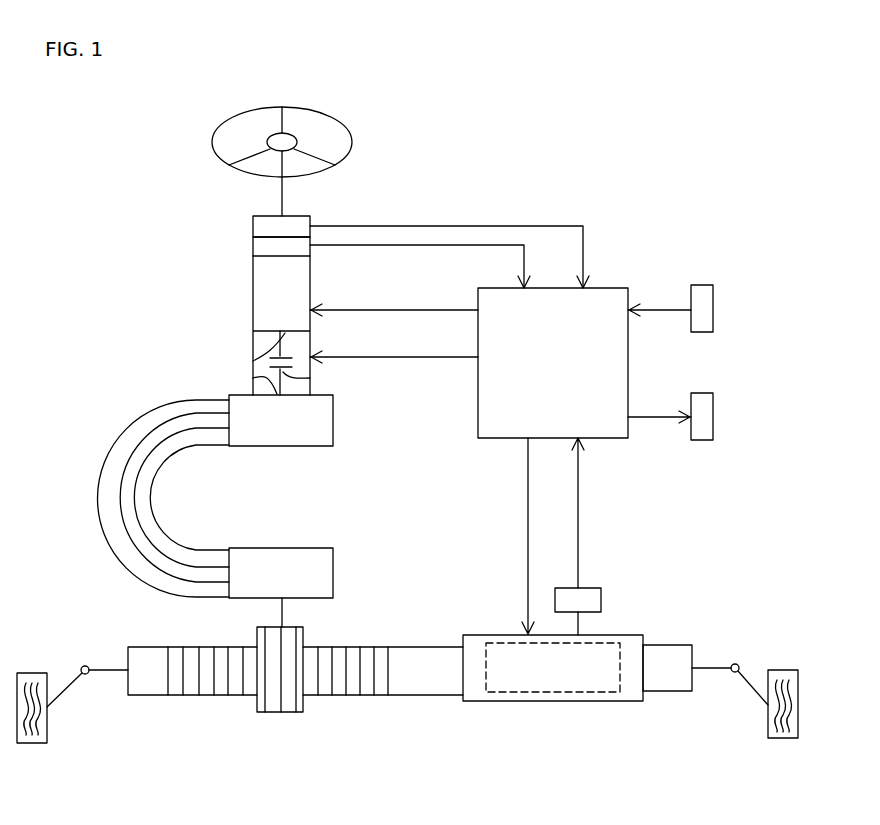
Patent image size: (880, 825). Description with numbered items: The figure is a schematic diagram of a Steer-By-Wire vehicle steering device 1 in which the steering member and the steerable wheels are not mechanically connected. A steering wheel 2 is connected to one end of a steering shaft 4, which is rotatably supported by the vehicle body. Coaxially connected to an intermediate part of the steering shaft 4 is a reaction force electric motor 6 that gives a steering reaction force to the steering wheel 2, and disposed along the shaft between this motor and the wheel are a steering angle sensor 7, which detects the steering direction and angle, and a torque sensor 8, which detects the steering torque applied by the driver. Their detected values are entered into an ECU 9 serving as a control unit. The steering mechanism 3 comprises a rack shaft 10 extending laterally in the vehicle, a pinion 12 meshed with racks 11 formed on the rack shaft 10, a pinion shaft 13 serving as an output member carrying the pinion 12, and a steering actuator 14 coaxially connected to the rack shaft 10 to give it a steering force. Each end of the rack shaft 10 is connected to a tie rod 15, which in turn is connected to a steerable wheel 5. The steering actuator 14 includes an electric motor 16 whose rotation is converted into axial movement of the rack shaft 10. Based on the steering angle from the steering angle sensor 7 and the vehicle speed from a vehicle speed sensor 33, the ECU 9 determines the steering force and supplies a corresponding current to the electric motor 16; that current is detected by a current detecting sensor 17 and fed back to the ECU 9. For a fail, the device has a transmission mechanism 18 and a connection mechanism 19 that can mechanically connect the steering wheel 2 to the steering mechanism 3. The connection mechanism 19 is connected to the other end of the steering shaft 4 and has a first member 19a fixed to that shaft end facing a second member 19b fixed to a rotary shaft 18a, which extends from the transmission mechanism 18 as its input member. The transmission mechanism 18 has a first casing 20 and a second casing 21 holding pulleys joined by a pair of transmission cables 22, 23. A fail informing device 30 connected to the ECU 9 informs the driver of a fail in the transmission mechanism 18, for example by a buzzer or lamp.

The vehicle steering device 1 is at (516, 181).
The steering wheel 2 is at (352, 142).
The steering mechanism 3 is at (644, 560).
The steering shaft 4 is at (282, 192).
The steerable wheels 5 is at (33, 673).
The reaction force electric motor 6 is at (258, 301).
The steering angle sensor 7 is at (256, 226).
The torque sensor 8 is at (256, 249).
The ECU 9 is at (603, 294).
The rack shaft 10 is at (432, 698).
The racks 11 is at (342, 690).
The pinion 12 is at (278, 700).
The pinion shaft 13 is at (282, 620).
The steering actuator 14 is at (598, 703).
The tie rod 15 is at (64, 695).
The electric motor 16 is at (537, 680).
The current detecting sensor 17 is at (601, 598).
The transmission mechanism 18 is at (362, 493).
The rotary shaft 18a is at (290, 378).
The connection mechanism 19 is at (193, 340).
The first member 19a is at (278, 358).
The second member 19b is at (265, 374).
The first casing 20 is at (333, 421).
The second casing 21 is at (333, 573).
The transmission cable 22 is at (130, 438).
The transmission cable 23 is at (138, 480).
The fail informing device 30 is at (713, 414).
The vehicle speed sensor 33 is at (713, 308).